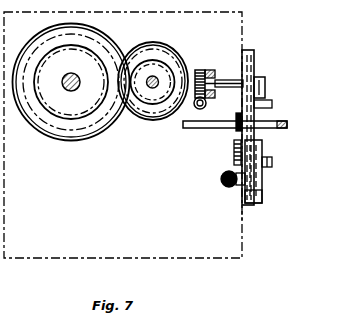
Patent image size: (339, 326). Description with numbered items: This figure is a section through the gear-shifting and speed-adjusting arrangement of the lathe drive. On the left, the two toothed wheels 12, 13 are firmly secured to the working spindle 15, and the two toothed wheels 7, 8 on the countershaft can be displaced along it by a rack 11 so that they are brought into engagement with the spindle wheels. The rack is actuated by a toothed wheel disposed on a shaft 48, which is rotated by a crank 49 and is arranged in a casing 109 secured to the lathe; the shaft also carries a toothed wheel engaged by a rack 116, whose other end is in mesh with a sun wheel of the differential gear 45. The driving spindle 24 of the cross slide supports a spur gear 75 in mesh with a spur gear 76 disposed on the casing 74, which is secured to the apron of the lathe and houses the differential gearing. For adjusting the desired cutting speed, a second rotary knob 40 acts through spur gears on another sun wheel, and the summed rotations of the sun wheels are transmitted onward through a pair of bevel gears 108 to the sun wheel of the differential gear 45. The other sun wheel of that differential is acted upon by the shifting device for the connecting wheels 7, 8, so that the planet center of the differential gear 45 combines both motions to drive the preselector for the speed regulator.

The toothed wheel 12 is at (88, 35).
The toothed wheel 13 is at (62, 113).
The working spindle 15 is at (71, 91).
The toothed wheel 7 is at (140, 92).
The toothed wheel 8 is at (160, 110).
The shaft 48 is at (231, 84).
The rack 11 is at (206, 103).
The casing 109 is at (255, 65).
The crank 49 is at (263, 90).
The rack 116 is at (270, 105).
The driving spindle 24 is at (193, 128).
The spur gear 75 is at (240, 125).
The spur gear 76 is at (236, 150).
The casing 74 is at (262, 148).
The rotary knob 40 is at (271, 163).
The pair of bevel gears 108 is at (224, 183).
The differential gear 45 is at (256, 195).